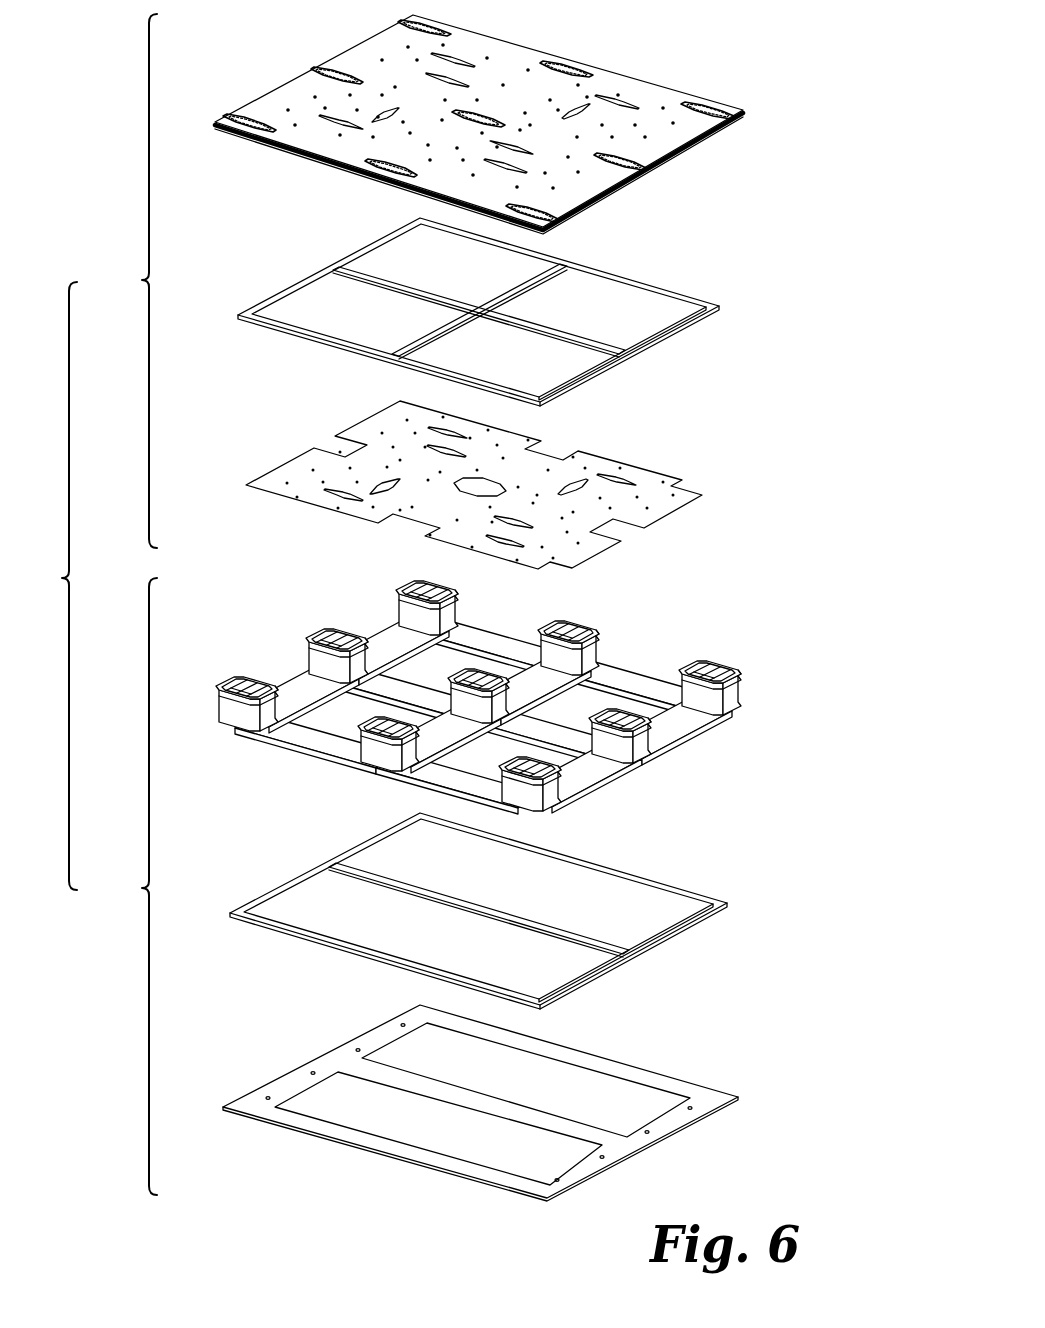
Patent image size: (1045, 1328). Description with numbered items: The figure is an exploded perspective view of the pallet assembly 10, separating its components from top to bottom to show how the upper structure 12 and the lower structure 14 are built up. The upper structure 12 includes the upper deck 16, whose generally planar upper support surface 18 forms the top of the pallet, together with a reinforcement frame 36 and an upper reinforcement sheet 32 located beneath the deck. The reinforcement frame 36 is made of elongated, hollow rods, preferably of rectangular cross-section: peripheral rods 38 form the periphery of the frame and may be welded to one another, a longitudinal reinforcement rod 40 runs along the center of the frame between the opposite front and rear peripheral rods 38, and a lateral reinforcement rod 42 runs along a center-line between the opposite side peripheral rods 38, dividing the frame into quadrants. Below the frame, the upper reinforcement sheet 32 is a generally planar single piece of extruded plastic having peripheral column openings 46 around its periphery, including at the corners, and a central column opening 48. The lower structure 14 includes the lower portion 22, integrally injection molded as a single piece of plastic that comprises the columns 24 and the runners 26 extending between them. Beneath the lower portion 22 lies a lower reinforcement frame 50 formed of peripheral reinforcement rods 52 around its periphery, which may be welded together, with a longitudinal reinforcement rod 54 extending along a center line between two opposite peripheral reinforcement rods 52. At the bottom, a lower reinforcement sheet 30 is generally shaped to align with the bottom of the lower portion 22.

The pallet assembly 10 is at (432, 607).
The upper structure 12 is at (469, 301).
The lower structure 14 is at (474, 888).
The upper deck 16 is at (748, 112).
The upper support surface 18 is at (650, 88).
The lower portion 22 is at (748, 692).
The columns 24 is at (596, 640).
The runners 26 is at (485, 631).
The lower reinforcement sheet 30 is at (700, 1086).
The upper reinforcement sheet 32 is at (698, 506).
The reinforcement frame 36 is at (722, 306).
The peripheral rods 38 is at (305, 278).
The longitudinal reinforcement rod 40 is at (553, 328).
The lateral reinforcement rod 42 is at (510, 284).
The peripheral column openings 46 is at (575, 446).
The central column opening 48 is at (487, 488).
The lower reinforcement frame 50 is at (727, 905).
The peripheral reinforcement rods 52 is at (300, 868).
The longitudinal reinforcement rod 54 is at (522, 918).